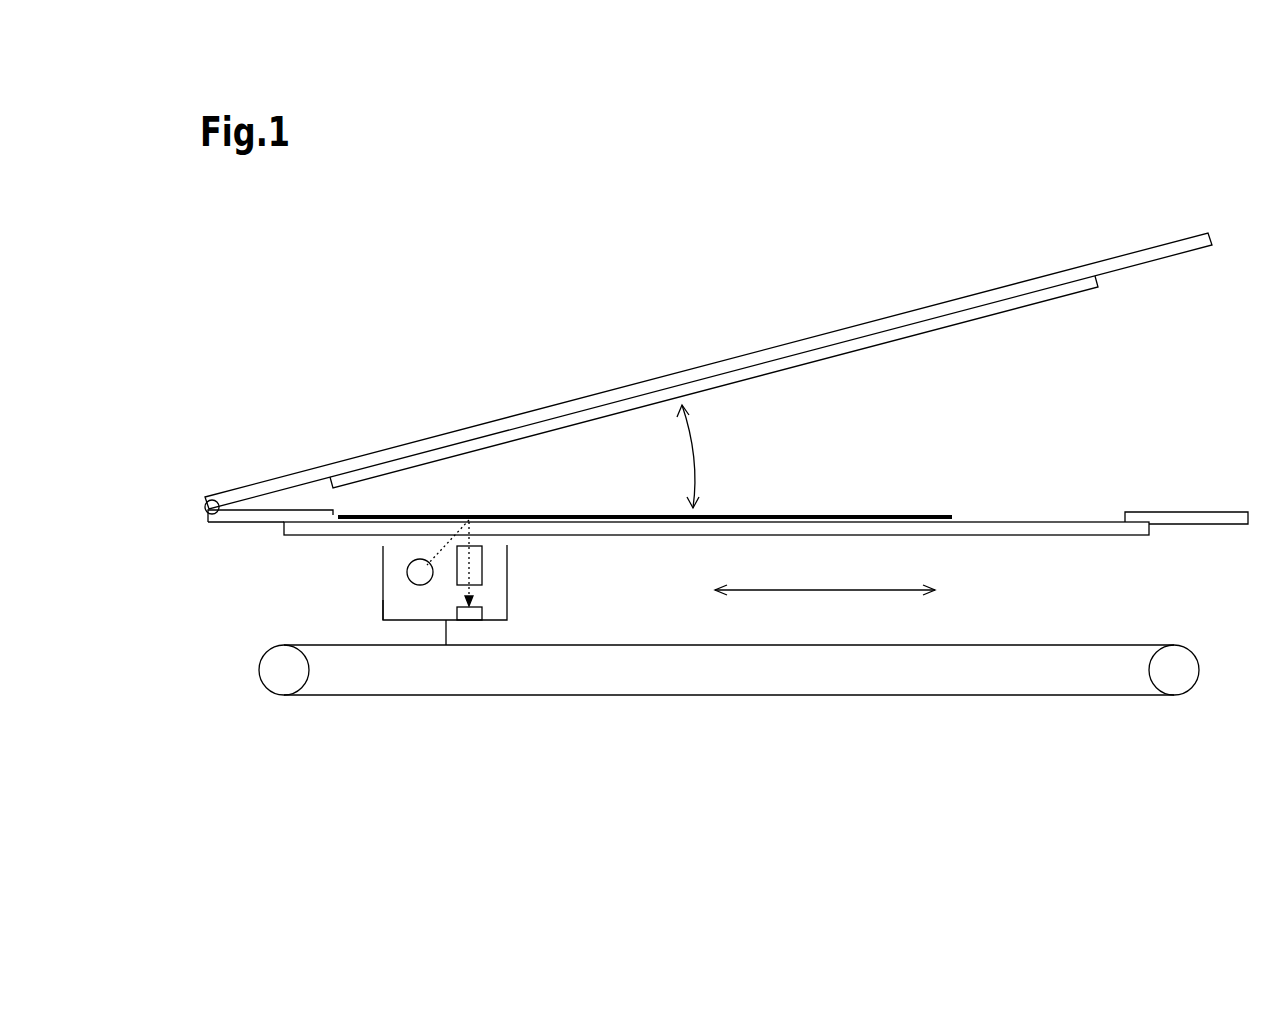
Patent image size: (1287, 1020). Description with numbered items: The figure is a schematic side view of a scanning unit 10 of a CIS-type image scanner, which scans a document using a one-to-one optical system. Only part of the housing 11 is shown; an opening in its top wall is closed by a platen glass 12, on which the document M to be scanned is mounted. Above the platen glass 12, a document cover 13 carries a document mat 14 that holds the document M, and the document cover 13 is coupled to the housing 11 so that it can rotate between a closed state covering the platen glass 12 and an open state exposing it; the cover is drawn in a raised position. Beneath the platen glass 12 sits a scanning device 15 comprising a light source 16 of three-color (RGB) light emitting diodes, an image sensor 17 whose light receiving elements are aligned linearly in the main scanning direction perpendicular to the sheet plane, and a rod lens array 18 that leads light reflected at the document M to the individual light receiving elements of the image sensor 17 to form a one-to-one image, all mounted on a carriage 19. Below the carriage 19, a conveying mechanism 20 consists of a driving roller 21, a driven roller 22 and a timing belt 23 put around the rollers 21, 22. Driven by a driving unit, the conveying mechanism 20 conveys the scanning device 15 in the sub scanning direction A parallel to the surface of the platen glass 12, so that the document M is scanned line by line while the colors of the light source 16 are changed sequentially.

The scanning unit 10 is at (430, 320).
The housing 11 is at (231, 523).
The platen glass 12 is at (1075, 521).
The document cover 13 is at (1110, 258).
The document mat 14 is at (885, 346).
The scanning device 15 is at (509, 585).
The light source 16 is at (408, 570).
The image sensor 17 is at (470, 621).
The rod lens array 18 is at (484, 550).
The carriage 19 is at (383, 605).
The conveying mechanism 20 is at (786, 698).
The driving roller 21 is at (1182, 670).
The driven roller 22 is at (272, 667).
The timing belt 23 is at (927, 696).
The document M is at (582, 514).
The direction A is at (825, 580).